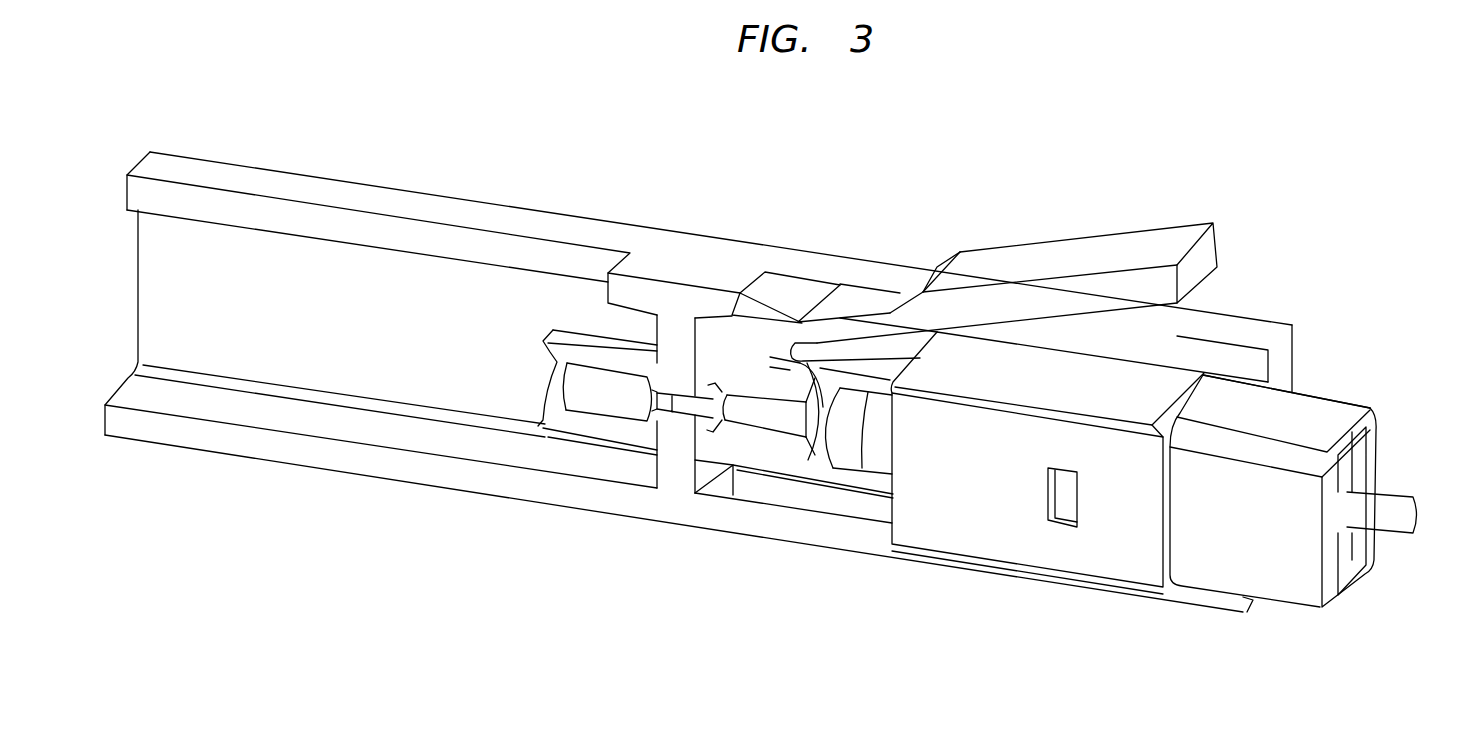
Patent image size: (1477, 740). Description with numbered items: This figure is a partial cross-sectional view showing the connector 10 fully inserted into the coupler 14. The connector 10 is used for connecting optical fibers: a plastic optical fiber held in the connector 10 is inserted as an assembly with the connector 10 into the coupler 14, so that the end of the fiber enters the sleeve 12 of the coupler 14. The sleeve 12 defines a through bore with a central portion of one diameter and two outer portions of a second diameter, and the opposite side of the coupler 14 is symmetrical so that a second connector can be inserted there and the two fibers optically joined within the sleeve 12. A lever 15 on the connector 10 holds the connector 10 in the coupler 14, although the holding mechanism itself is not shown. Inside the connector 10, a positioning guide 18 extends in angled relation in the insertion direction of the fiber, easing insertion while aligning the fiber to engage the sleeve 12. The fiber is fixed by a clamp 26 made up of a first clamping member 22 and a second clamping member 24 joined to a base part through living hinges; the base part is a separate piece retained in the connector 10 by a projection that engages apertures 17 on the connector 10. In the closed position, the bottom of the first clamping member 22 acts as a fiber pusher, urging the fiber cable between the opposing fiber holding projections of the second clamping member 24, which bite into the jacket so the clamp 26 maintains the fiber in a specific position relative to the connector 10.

The connector 10 is at (972, 533).
The sleeve 12 is at (603, 430).
The coupler 14 is at (777, 522).
The lever 15 is at (1087, 253).
The apertures 17 is at (1062, 520).
The positioning guide 18 is at (882, 463).
The first clamping member 22 is at (1372, 418).
The second clamping member 24 is at (1355, 575).
The clamp 26 is at (1343, 383).